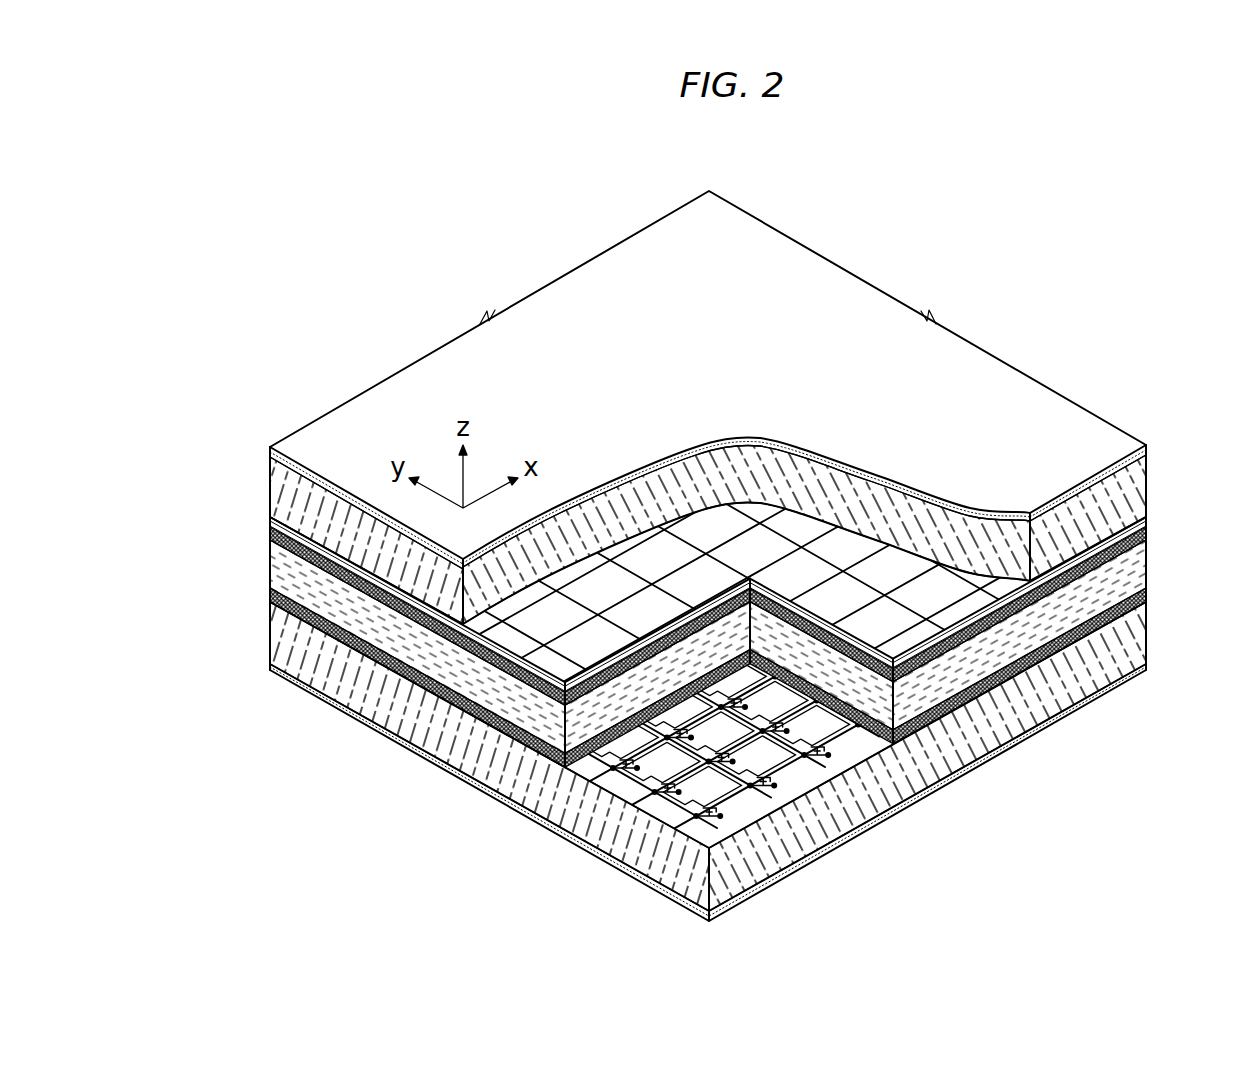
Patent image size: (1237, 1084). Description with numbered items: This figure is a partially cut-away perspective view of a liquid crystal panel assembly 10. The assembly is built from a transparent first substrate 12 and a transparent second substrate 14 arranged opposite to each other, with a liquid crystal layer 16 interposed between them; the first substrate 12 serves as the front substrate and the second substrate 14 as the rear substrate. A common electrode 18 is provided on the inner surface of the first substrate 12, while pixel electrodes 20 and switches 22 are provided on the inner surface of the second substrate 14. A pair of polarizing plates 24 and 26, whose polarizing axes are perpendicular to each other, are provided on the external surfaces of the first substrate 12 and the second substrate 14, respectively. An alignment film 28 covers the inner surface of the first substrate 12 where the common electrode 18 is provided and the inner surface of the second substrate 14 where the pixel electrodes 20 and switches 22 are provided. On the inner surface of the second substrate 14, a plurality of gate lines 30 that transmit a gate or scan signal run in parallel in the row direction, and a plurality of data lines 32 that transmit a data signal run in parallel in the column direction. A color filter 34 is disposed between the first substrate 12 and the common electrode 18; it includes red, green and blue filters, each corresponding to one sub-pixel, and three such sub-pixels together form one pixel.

The liquid crystal panel assembly 10 is at (884, 268).
The first substrate 12 is at (290, 492).
The second substrate 14 is at (290, 634).
The liquid crystal layer 16 is at (1010, 640).
The common electrode 18 is at (1148, 530).
The pixel electrodes 20 is at (736, 792).
The switches 22 is at (714, 817).
The polarizing plate 24 is at (357, 418).
The polarizing plate 26 is at (463, 777).
The alignment film 28 is at (288, 582).
The gate lines 30 is at (613, 768).
The data lines 32 is at (692, 807).
The color filter 34 is at (928, 647).